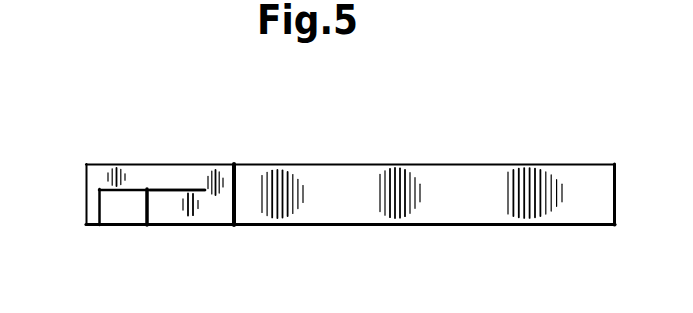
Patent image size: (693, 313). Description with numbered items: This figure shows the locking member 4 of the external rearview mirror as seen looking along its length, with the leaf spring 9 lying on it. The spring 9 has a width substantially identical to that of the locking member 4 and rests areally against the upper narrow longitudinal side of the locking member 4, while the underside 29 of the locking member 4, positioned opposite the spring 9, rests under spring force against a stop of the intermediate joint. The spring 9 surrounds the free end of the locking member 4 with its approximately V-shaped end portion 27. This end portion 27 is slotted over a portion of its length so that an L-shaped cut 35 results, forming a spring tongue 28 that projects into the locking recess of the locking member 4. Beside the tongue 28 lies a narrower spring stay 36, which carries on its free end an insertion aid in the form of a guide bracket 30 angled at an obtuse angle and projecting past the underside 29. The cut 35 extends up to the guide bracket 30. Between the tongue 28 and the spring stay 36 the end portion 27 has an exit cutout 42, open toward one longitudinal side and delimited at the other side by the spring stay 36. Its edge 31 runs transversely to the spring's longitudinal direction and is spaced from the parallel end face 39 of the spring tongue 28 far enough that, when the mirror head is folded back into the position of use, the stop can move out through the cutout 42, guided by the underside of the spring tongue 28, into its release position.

The locking member 4 is at (522, 163).
The spring 9 is at (210, 163).
The end portion 27 is at (219, 229).
The spring tongue 28 is at (159, 202).
The underside 29 is at (578, 182).
The guide bracket 30 is at (218, 207).
The edge 31 is at (97, 205).
The cut 35 is at (165, 189).
The spring stay 36 is at (122, 178).
The end face 39 is at (144, 205).
The exit cutout 42 is at (117, 203).